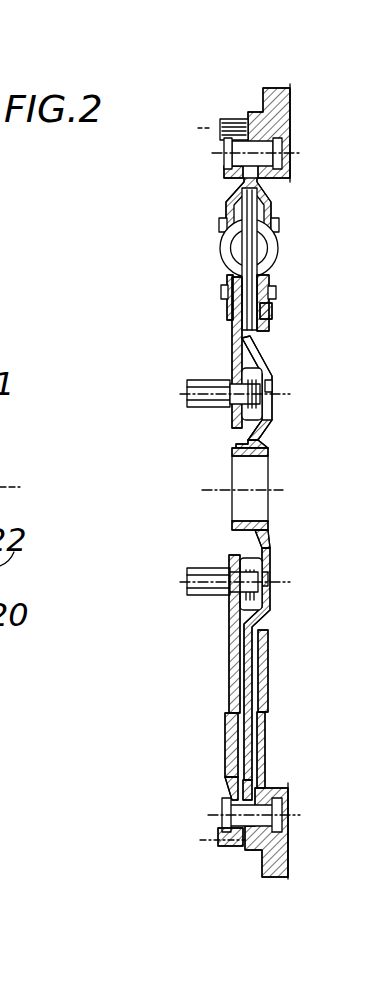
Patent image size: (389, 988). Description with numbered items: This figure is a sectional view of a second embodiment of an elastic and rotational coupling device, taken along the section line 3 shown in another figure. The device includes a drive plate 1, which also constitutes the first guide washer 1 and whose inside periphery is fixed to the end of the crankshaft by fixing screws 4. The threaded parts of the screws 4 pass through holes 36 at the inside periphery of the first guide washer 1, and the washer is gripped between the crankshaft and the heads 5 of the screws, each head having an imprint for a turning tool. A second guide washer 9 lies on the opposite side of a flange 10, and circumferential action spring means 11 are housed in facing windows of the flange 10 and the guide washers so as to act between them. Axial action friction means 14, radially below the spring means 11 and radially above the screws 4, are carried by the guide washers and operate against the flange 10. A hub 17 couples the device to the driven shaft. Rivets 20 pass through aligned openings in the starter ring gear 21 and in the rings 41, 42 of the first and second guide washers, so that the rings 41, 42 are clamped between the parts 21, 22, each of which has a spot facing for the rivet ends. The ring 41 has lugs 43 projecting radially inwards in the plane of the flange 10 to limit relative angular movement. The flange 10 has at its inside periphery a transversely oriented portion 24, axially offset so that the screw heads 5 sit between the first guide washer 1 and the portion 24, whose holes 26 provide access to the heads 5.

The drive plate / first guide washer 1 is at (238, 337).
The section line / guide washer 3 is at (274, 725).
The fixing screws 4 is at (200, 594).
The screw heads 5 is at (247, 604).
The second guide washer 9 is at (268, 288).
The flange 10 is at (272, 359).
The circumferential action spring means 11 is at (270, 252).
The axial action friction means 14 is at (223, 293).
The hub 17 is at (267, 448).
The rivets 20 is at (283, 148).
The starter ring gear 21 is at (213, 131).
The part 22 is at (290, 117).
The transversely oriented portion 24 is at (270, 615).
The holes 26 is at (263, 392).
The holes 36 is at (222, 582).
The ring 41 is at (250, 840).
The ring 42 is at (272, 850).
The lugs 43 is at (235, 780).